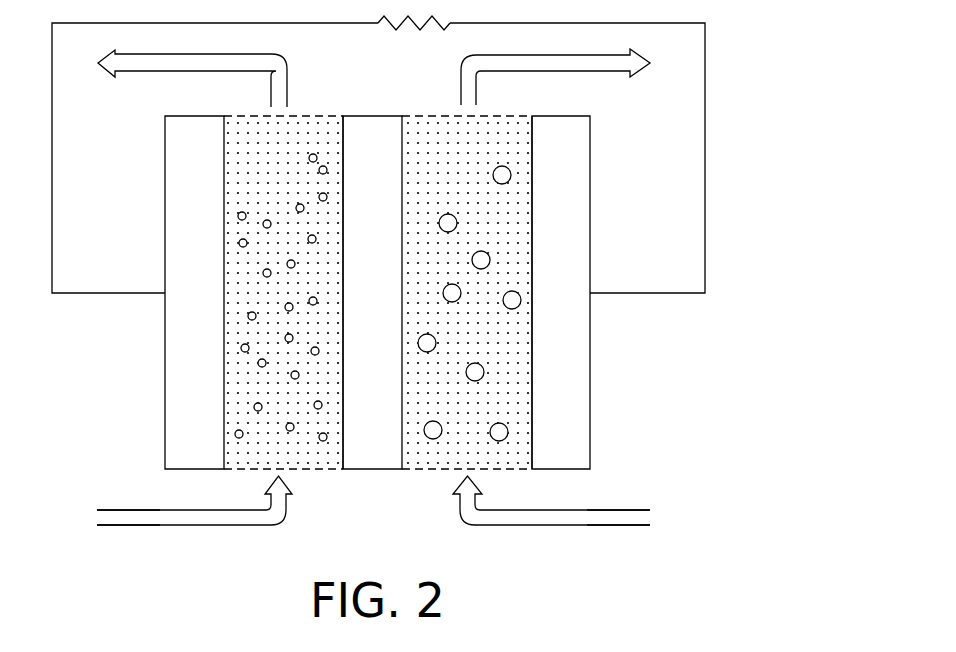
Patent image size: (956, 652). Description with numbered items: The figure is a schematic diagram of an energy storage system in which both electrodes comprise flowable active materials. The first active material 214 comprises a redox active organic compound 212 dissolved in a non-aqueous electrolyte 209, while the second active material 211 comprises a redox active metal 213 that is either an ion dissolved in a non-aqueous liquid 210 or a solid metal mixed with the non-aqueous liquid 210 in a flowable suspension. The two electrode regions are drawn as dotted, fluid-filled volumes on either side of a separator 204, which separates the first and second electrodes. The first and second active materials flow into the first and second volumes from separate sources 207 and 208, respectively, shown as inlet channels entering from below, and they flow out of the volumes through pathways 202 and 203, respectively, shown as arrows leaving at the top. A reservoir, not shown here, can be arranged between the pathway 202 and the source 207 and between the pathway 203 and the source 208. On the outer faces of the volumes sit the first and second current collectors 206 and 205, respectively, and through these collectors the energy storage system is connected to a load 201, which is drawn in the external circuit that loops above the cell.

The load 201 is at (412, 25).
The pathway 202 is at (597, 71).
The pathway 203 is at (147, 71).
The separator 204 is at (394, 299).
The second current collector 205 is at (215, 299).
The first current collector 206 is at (582, 299).
The source 207 is at (587, 510).
The source 208 is at (160, 510).
The non-aqueous electrolyte 209 is at (461, 177).
The non-aqueous liquid 210 is at (288, 179).
The second active material 211 is at (300, 470).
The redox active organic compound 212 is at (487, 254).
The redox active metal 213 is at (241, 350).
The first active material 214 is at (448, 470).